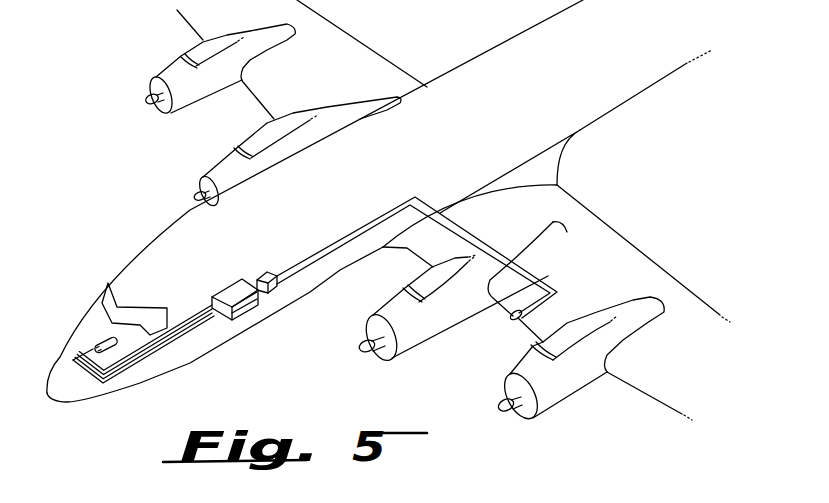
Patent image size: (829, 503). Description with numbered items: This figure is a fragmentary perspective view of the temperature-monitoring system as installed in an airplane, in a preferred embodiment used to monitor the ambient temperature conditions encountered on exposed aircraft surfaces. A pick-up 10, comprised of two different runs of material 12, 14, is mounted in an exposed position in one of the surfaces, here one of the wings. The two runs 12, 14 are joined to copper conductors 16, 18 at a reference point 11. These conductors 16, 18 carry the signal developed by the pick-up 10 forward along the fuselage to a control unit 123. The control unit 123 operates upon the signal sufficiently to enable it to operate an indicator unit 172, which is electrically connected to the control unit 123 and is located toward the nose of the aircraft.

The pick-up 10 is at (512, 320).
The reference point 11 is at (268, 273).
The run of material 12 is at (390, 210).
The run of material 14 is at (422, 212).
The copper conductor 16 is at (252, 282).
The copper conductor 18 is at (261, 291).
The control unit 123 is at (228, 292).
The indicator unit 172 is at (92, 338).